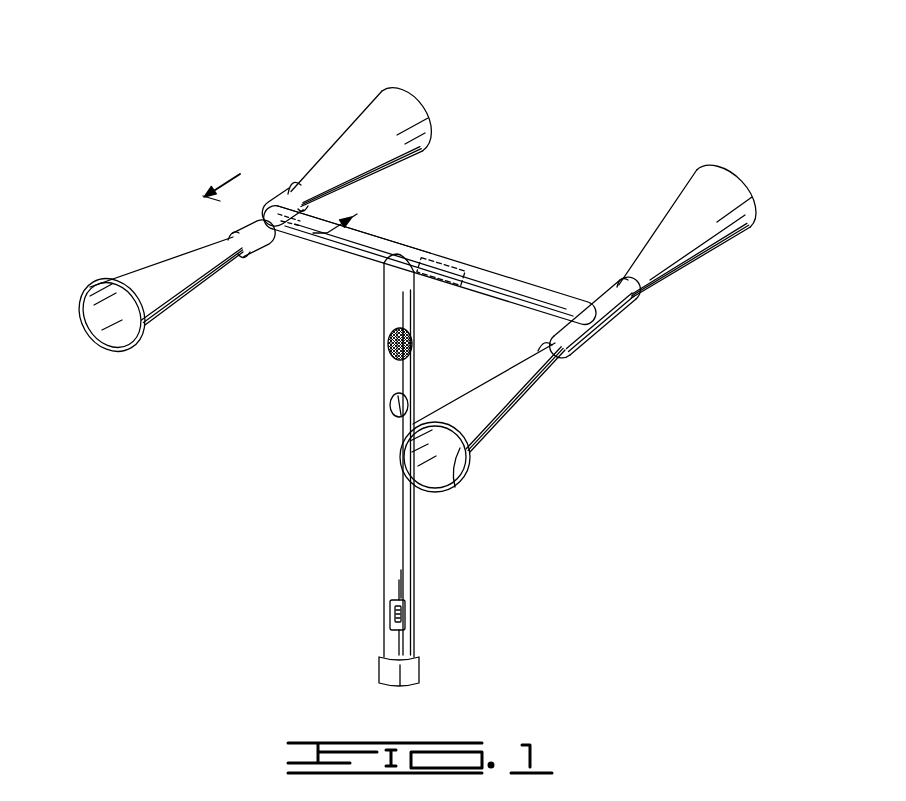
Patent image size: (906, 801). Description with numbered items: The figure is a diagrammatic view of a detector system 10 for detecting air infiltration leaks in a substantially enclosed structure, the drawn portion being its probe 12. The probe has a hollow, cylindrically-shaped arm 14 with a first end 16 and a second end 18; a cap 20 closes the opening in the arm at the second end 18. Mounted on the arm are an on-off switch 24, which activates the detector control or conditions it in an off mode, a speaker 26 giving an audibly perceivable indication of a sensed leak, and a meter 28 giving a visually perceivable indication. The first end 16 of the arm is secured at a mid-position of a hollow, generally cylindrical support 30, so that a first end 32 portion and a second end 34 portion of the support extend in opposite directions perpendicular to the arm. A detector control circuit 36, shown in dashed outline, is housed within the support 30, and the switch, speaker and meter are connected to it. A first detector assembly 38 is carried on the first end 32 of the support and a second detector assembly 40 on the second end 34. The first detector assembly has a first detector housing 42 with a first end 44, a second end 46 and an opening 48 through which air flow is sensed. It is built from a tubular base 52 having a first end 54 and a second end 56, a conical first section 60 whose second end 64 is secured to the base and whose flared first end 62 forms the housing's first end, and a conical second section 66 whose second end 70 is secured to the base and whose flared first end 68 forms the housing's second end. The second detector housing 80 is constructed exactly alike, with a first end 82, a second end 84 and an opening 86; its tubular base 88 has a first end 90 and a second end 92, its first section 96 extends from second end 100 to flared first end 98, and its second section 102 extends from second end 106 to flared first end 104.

The detector system 10 is at (505, 150).
The probe 12 is at (490, 256).
The arm 14 is at (383, 427).
The first end 16 is at (383, 265).
The second end 18 is at (382, 651).
The cap 20 is at (420, 672).
The on-off switch 24 is at (405, 621).
The speaker 26 is at (390, 341).
The meter 28 is at (391, 402).
The support 30 is at (393, 244).
The first end 32 is at (267, 197).
The second end 34 is at (592, 325).
The detector control circuit 36 is at (450, 254).
The first detector assembly 38 is at (120, 252).
The second detector assembly 40 is at (624, 337).
The first detector housing 42 is at (402, 182).
The first end 44 is at (86, 292).
The second end 46 is at (394, 90).
The opening 48 is at (116, 330).
The base 52 is at (250, 236).
The first end 54 is at (212, 233).
The second end 56 is at (294, 178).
The first section 60 is at (114, 262).
The first end 62 is at (97, 317).
The second end 64 is at (238, 258).
The second section 66 is at (402, 153).
The first end 68 is at (426, 103).
The second end 70 is at (328, 171).
The second detector housing 80 is at (528, 430).
The first end 82 is at (456, 490).
The second end 84 is at (728, 163).
The opening 86 is at (410, 459).
The base 88 is at (603, 284).
The first end 90 is at (542, 346).
The second end 92 is at (625, 276).
The first section 96 is at (489, 433).
The first end 98 is at (437, 493).
The second end 100 is at (568, 360).
The second section 102 is at (683, 250).
The first end 104 is at (753, 197).
The second end 106 is at (634, 305).